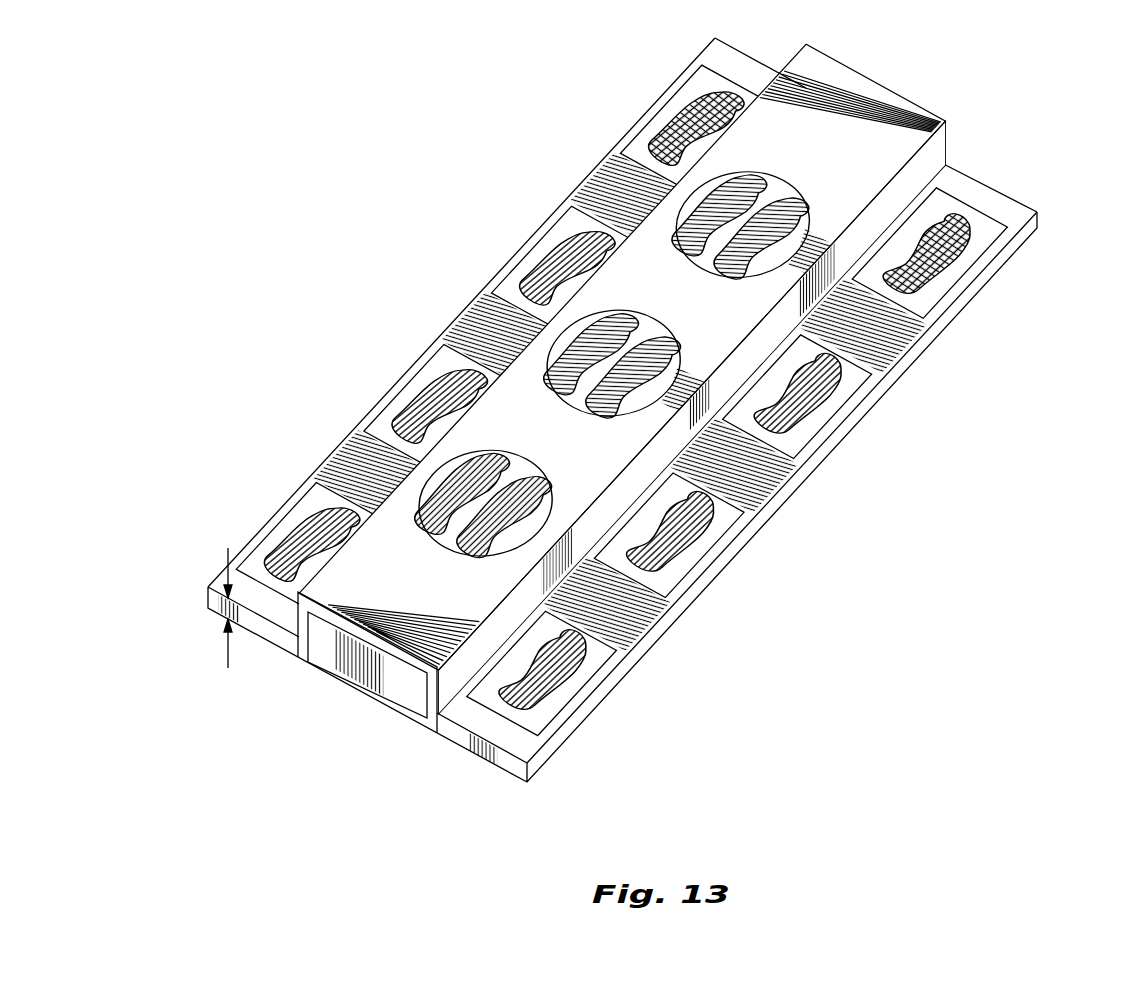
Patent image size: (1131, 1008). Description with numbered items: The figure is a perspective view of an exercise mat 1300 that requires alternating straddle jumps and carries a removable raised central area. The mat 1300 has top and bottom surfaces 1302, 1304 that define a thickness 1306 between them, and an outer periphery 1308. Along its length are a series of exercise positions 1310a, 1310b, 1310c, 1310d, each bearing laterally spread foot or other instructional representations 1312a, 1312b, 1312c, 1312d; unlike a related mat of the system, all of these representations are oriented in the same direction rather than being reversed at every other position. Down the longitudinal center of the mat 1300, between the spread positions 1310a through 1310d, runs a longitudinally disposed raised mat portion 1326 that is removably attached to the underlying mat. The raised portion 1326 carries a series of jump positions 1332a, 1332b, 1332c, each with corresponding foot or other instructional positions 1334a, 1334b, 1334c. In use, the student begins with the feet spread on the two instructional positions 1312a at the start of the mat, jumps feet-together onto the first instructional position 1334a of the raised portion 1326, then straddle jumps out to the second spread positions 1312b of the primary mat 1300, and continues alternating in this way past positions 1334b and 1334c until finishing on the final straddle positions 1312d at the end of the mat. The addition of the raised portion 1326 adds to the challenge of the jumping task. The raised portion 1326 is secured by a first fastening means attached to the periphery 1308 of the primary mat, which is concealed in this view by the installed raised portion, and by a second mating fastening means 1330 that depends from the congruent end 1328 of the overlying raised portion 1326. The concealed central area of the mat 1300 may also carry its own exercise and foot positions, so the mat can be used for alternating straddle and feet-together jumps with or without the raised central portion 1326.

The mat 1300 is at (618, 431).
The top surface 1302 is at (610, 158).
The bottom surface 1304 is at (484, 311).
The thickness 1306 is at (208, 612).
The periphery 1308 is at (474, 755).
The exercise position 1310a is at (312, 491).
The exercise position 1310b is at (440, 348).
The exercise position 1310c is at (558, 214).
The exercise position 1310d is at (686, 73).
The foot representation 1312a is at (275, 540).
The foot representation 1312b is at (410, 398).
The foot representation 1312c is at (550, 266).
The foot representation 1312d is at (668, 123).
The raised mat portion 1326 is at (908, 150).
The end 1328 is at (950, 140).
The second mating fastening means 1330 is at (353, 678).
The jump position 1332a is at (453, 572).
The jump position 1332b is at (625, 420).
The jump position 1332c is at (765, 278).
The instructional position 1334a is at (528, 462).
The instructional position 1334b is at (652, 330).
The instructional position 1334c is at (803, 195).